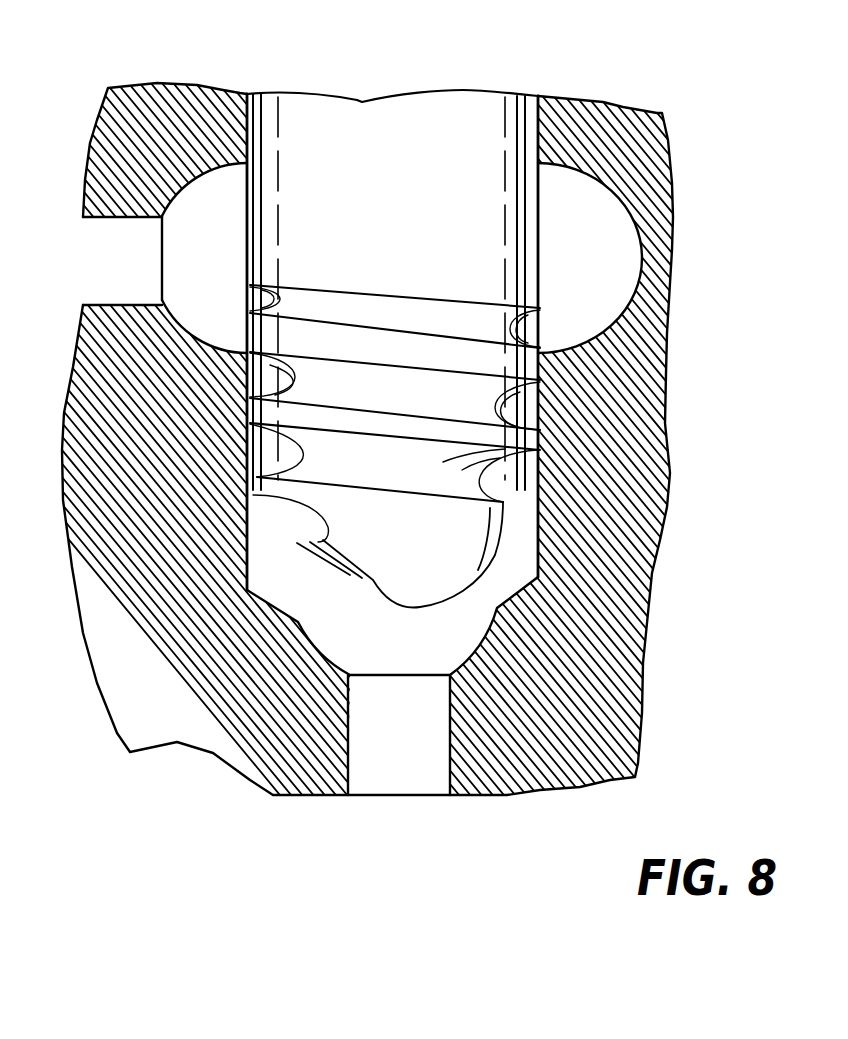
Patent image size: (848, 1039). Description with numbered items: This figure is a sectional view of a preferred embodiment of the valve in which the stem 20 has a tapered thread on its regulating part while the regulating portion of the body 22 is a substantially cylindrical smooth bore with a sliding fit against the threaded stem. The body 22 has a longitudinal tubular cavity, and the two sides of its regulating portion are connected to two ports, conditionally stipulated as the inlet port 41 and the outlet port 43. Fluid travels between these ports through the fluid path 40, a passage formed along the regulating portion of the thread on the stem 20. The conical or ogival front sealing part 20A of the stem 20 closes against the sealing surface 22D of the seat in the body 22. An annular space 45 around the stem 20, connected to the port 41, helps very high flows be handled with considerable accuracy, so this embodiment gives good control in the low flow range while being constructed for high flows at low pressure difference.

The stem 20 is at (393, 335).
The conical/ogival front sealing part of the stem 20A is at (373, 575).
The body of the valve 22 is at (617, 690).
The sealing surface of the seat in the body 22D is at (478, 652).
The fluid path 40 is at (250, 433).
The inlet port 41 is at (417, 768).
The outlet port 43 is at (105, 265).
The annular space around the stem 45 is at (593, 264).